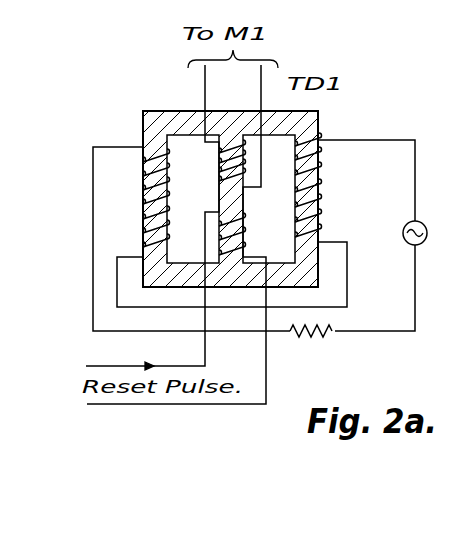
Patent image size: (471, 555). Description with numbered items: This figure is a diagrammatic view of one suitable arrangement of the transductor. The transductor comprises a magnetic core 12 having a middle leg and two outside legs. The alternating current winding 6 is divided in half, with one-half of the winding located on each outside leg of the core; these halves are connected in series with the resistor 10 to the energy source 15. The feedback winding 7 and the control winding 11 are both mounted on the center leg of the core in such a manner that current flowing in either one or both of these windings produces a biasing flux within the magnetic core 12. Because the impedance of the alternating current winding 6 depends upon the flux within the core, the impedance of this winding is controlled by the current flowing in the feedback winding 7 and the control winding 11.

The alternating current winding 6 is at (143, 195).
The feedback winding 7 is at (218, 157).
The resistor 10 is at (321, 334).
The control winding 11 is at (246, 216).
The magnetic core 12 is at (312, 126).
The energy source 15 is at (427, 226).